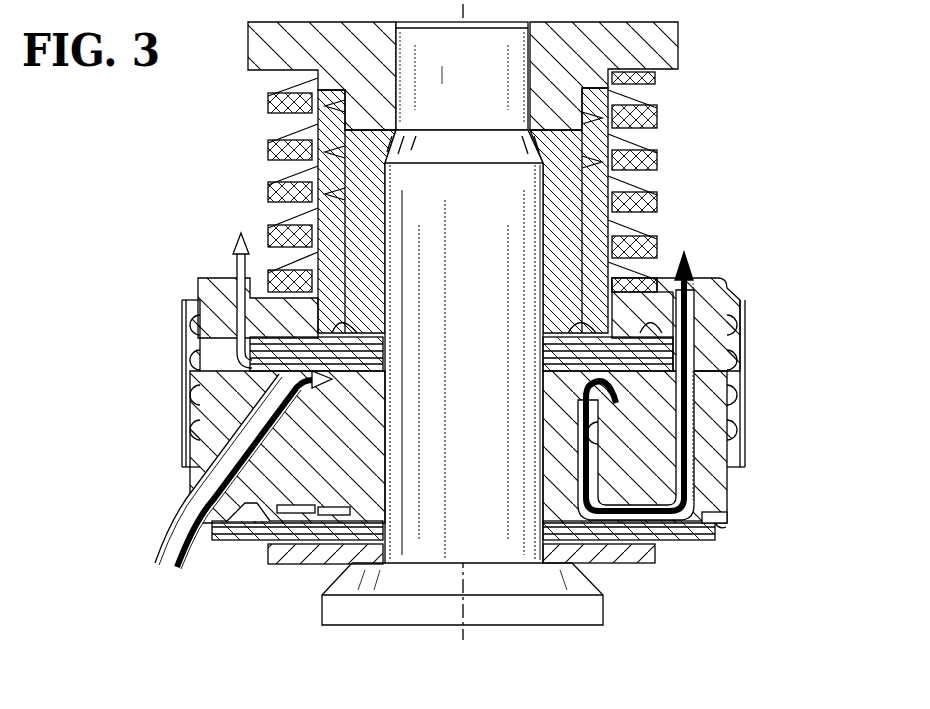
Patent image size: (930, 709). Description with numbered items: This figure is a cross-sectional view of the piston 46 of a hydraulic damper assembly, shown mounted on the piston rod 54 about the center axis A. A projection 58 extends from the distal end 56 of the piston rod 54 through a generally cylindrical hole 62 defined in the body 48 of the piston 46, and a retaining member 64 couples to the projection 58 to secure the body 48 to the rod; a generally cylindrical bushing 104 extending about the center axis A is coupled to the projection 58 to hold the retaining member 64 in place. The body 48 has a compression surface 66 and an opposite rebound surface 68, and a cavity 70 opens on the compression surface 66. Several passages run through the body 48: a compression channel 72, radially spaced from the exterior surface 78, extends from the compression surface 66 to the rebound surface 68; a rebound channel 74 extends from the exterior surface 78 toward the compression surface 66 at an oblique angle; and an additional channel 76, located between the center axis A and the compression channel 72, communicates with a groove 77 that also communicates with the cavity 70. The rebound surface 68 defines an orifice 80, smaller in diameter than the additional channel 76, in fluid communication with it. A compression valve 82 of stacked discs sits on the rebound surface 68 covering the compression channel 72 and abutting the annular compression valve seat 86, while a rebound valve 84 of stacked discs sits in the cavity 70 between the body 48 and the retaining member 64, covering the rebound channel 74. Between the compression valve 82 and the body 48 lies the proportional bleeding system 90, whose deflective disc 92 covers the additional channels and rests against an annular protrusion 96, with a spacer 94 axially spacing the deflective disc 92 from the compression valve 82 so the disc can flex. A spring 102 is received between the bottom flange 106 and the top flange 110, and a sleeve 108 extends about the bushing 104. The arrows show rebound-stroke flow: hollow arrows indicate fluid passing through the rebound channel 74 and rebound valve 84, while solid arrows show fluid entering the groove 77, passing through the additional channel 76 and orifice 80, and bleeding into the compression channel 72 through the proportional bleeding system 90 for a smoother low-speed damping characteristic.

The piston 46 is at (168, 497).
The body 48 is at (185, 418).
The piston rod 54 is at (355, 612).
The distal end 56 is at (556, 566).
The projection 58 is at (527, 178).
The hole 62 is at (507, 47).
The retaining member 64 is at (317, 172).
The compression surface 66 is at (727, 283).
The rebound surface 68 is at (726, 527).
The cavity 70 is at (200, 328).
The compression channel 72 is at (746, 357).
The rebound channel 74 is at (284, 450).
The additional channel 76 is at (598, 430).
The groove 77 is at (613, 398).
The exterior surface 78 is at (740, 521).
The orifice 80 is at (592, 485).
The compression valve 82 is at (668, 541).
The rebound valve 84 is at (653, 330).
The compression valve seat 86 is at (250, 537).
The proportional bleeding system 90 is at (372, 500).
The deflective disc 92 is at (556, 506).
The spacer 94 is at (378, 520).
The protrusion 96 is at (322, 505).
The spring 102 is at (657, 112).
The bushing 104 is at (327, 142).
The bottom flange 106 is at (650, 50).
The sleeve 108 is at (593, 186).
The top flange 110 is at (663, 320).
The center axis A is at (466, 640).